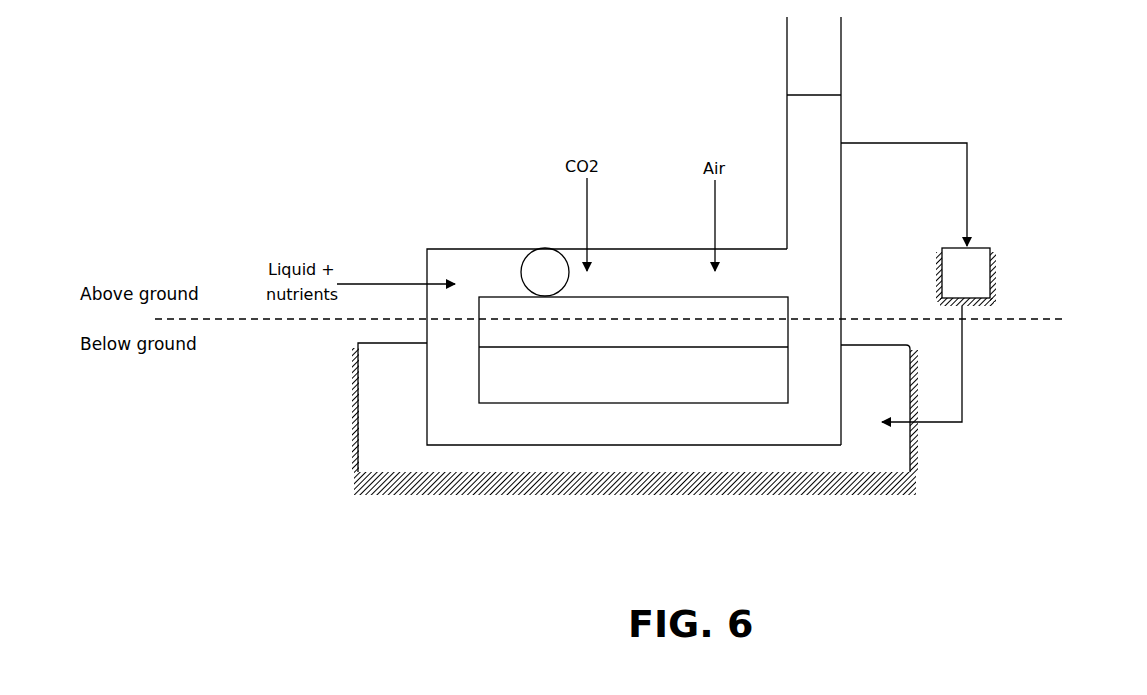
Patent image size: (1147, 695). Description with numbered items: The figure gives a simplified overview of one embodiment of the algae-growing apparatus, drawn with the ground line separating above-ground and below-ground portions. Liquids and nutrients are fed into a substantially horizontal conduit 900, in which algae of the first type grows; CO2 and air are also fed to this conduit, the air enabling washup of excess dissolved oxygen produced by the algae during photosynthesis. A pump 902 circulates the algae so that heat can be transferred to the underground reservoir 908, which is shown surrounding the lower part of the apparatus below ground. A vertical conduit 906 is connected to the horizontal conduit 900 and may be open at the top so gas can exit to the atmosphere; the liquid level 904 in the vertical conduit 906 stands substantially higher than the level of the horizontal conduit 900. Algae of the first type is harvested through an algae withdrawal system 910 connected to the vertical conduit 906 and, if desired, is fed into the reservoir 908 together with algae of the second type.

The horizontal conduit 900 is at (458, 270).
The pump 902 is at (547, 266).
The liquid level 904 is at (813, 92).
The vertical conduit 906 is at (810, 160).
The underground reservoir 908 is at (398, 421).
The algae withdrawal system 910 is at (973, 268).